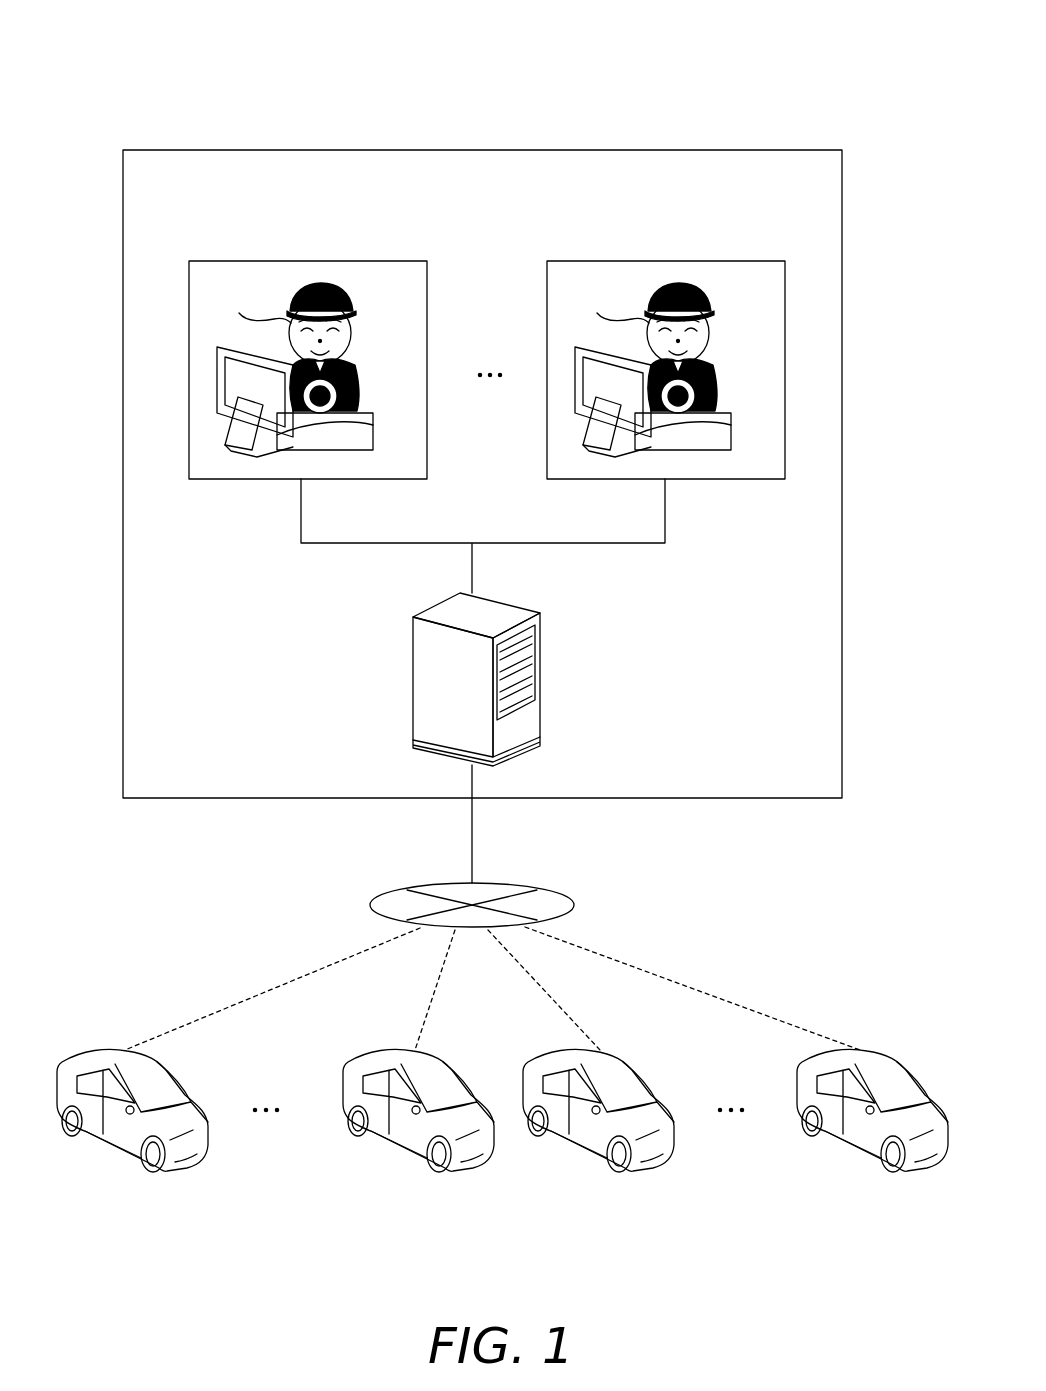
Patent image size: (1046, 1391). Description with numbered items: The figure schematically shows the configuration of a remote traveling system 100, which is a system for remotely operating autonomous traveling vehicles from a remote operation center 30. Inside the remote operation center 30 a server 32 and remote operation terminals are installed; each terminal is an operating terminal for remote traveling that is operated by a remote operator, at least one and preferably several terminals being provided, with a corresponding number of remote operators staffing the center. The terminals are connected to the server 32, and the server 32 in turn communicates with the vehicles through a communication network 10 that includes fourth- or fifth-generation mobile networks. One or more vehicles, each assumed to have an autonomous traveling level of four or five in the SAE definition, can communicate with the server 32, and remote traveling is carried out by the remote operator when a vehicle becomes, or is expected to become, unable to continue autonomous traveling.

The remote traveling system 100 is at (160, 44).
The remote operation center 30 is at (640, 152).
The server 32 is at (413, 682).
The communication network 10 is at (574, 905).